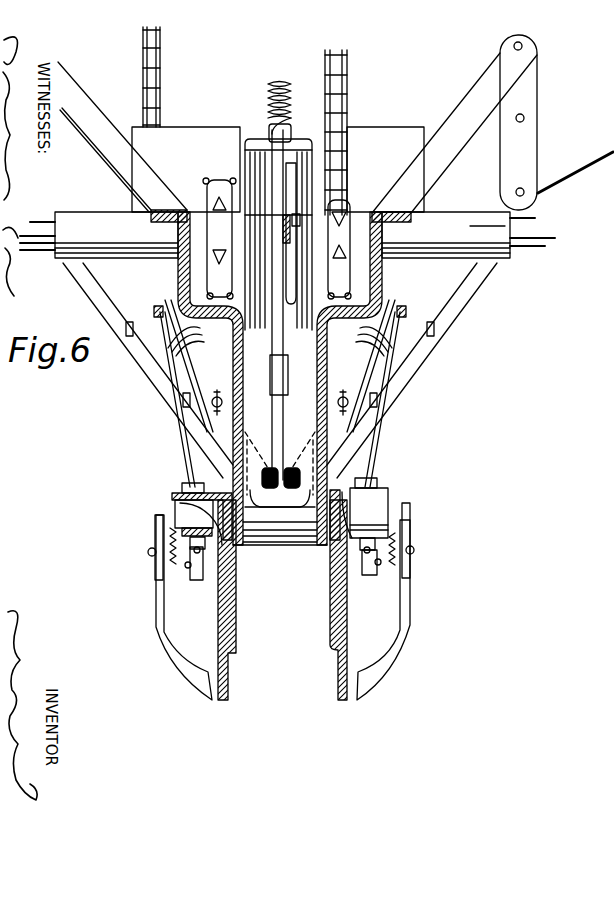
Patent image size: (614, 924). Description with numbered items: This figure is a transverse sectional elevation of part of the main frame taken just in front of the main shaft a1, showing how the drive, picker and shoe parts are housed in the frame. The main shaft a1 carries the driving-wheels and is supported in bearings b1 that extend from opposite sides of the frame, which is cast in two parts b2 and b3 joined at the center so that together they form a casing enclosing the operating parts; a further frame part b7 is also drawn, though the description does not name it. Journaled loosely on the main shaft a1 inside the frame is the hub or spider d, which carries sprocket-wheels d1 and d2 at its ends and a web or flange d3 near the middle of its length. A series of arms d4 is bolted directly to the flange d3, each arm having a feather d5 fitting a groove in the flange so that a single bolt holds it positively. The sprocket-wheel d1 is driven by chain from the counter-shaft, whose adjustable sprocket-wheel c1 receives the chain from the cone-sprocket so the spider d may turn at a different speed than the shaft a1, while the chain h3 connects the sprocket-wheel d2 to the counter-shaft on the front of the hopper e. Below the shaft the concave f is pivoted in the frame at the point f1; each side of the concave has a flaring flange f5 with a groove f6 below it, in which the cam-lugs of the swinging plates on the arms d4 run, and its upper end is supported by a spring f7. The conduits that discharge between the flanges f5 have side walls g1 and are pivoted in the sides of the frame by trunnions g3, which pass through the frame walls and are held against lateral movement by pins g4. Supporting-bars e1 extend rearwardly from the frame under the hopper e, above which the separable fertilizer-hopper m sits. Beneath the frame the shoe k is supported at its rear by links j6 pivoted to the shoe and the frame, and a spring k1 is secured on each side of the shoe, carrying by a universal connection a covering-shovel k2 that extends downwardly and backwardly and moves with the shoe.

The fertilizer-hopper m is at (146, 62).
The chain h3 is at (339, 122).
The side walls g1 is at (278, 169).
The spring f7 is at (267, 86).
The flaring flange f5 is at (253, 133).
The concave f is at (257, 315).
The web or flange d3 is at (287, 177).
The plunger rod b7 is at (281, 305).
The hub or spider d is at (282, 224).
The sprocket-wheel d1 is at (208, 191).
The sprocket-wheel d2 is at (347, 208).
The hopper e is at (556, 122).
The bearings b1 is at (265, 235).
The main shaft a1 is at (507, 233).
The arms d4 is at (295, 220).
The feather d5 is at (486, 238).
The main frame part b2 is at (190, 378).
The main frame part b3 is at (366, 378).
The adjustable sprocket-wheel c1 is at (97, 288).
The supporting-bars e1 is at (470, 283).
The pins g4 is at (218, 397).
The trunnions g3 is at (213, 400).
The links j6 is at (180, 440).
The groove f6 is at (253, 470).
The pivot point f1 is at (297, 540).
The spring k1 is at (180, 493).
The shoe k is at (282, 600).
The covering-shovel k2 is at (158, 610).